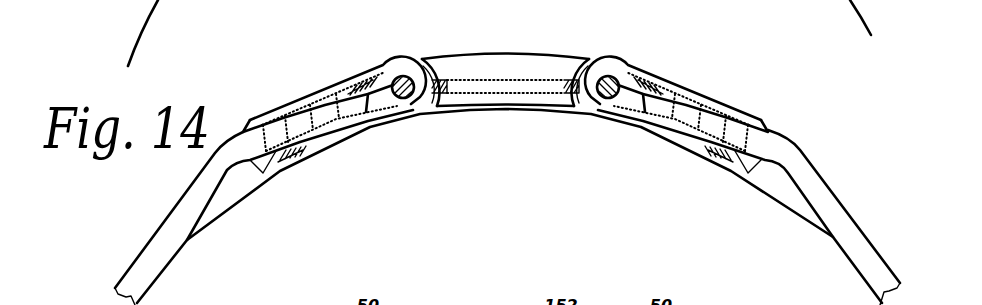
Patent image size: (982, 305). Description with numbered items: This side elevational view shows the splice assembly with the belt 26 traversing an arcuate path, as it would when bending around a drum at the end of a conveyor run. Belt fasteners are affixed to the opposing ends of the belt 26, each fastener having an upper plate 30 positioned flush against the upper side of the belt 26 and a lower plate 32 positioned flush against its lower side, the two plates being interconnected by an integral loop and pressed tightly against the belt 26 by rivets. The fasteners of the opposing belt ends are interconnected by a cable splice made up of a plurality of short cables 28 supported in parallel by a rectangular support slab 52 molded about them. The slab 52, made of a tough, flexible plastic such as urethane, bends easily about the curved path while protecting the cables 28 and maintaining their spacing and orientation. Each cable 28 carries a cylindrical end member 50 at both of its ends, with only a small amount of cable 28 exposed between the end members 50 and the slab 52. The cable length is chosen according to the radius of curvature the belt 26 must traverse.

The belt 26 is at (158, 247).
The short cables 28 is at (510, 89).
The upper plate 30 is at (311, 101).
The lower plate 32 is at (365, 122).
The end members 50 is at (406, 99).
The support slab 52 is at (523, 64).